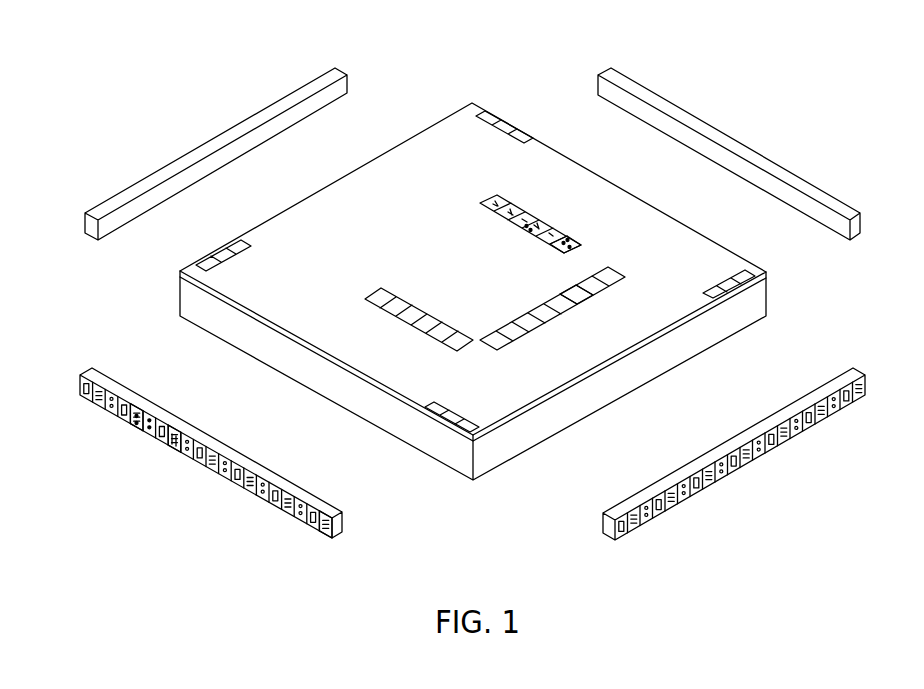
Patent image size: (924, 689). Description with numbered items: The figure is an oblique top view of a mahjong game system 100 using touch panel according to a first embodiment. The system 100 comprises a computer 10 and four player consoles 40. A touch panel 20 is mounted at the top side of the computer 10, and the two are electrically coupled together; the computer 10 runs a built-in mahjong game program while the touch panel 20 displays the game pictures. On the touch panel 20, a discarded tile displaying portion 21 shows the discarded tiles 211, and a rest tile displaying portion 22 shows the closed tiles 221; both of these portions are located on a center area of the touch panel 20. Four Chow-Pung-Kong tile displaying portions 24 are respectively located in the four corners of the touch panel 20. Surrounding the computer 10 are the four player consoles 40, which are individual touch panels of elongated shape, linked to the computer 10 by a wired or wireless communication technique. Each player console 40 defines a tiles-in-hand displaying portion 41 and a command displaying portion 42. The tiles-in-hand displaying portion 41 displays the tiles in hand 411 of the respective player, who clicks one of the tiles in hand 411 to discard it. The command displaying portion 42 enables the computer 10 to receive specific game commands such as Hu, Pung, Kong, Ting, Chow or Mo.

The mahjong game system 100 is at (95, 82).
The computer 10 is at (176, 296).
The touch panel 20 is at (325, 200).
The discarded tile displaying portion 21 is at (553, 227).
The discarded tiles 211 is at (565, 237).
The rest tile displaying portion 22 is at (527, 335).
The closed tiles 221 is at (562, 305).
The Chow-Pung-Kong tile displaying portion 24 is at (483, 437).
The player console 40 is at (212, 138).
The tiles-in-hand displaying portion 41 is at (140, 430).
The tiles in hand 411 is at (175, 447).
The command displaying portion 42 is at (323, 537).